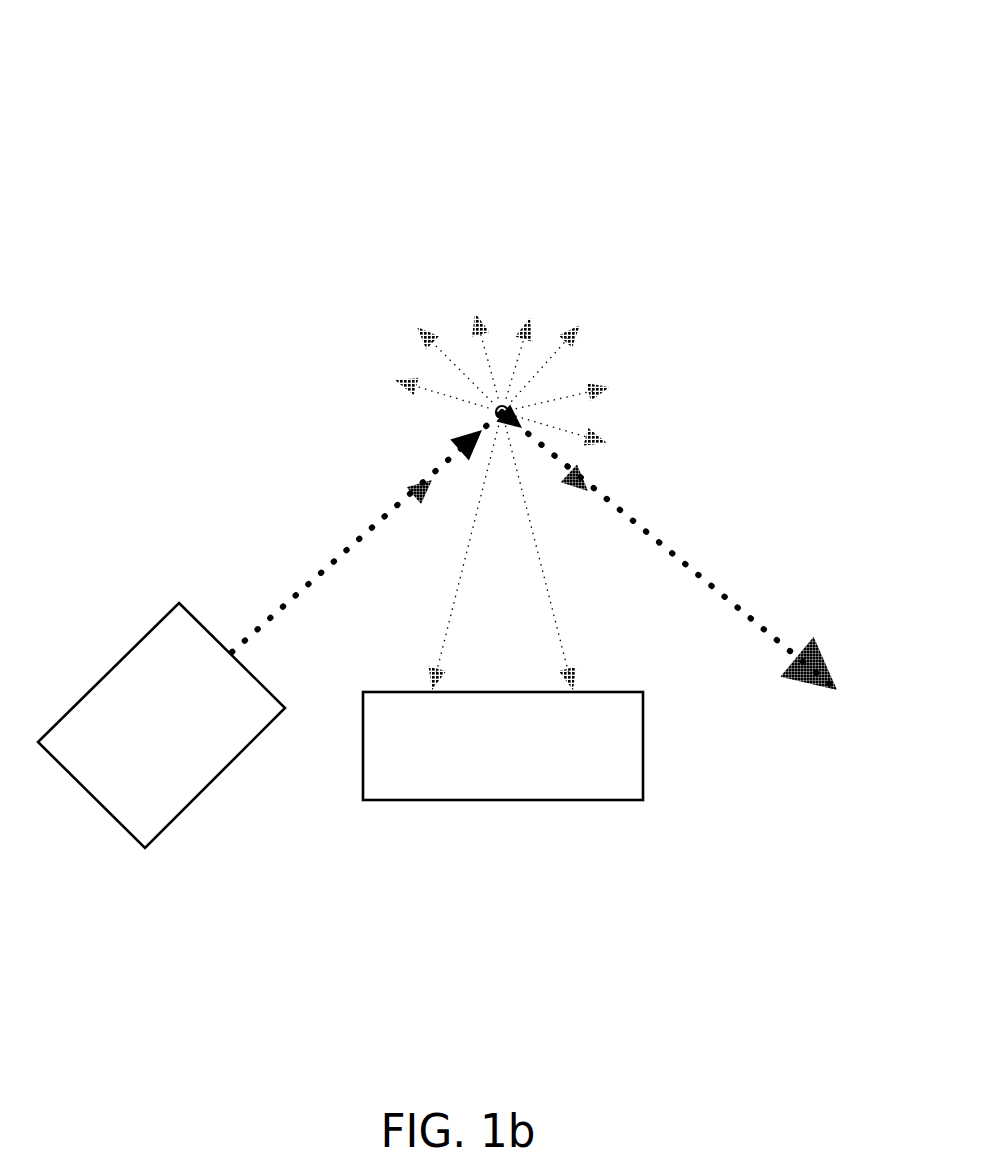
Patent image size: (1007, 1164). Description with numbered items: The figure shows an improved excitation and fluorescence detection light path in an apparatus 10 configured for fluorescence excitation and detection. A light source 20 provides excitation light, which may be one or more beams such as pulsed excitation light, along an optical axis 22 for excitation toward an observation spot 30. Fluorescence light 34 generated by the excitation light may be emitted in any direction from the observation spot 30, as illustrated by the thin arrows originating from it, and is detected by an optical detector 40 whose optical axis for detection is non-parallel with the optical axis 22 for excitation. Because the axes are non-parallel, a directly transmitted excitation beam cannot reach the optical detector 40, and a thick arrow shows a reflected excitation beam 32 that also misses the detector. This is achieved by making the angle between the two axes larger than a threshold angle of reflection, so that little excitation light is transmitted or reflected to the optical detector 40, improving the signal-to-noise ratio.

The apparatus 10 is at (743, 152).
The light source 20 is at (203, 798).
The optical axis for excitation 22 is at (373, 523).
The observation spot 30 is at (496, 413).
The reflected excitation beam 32 is at (703, 580).
The fluorescence light 34 is at (563, 350).
The optical detector 40 is at (643, 737).